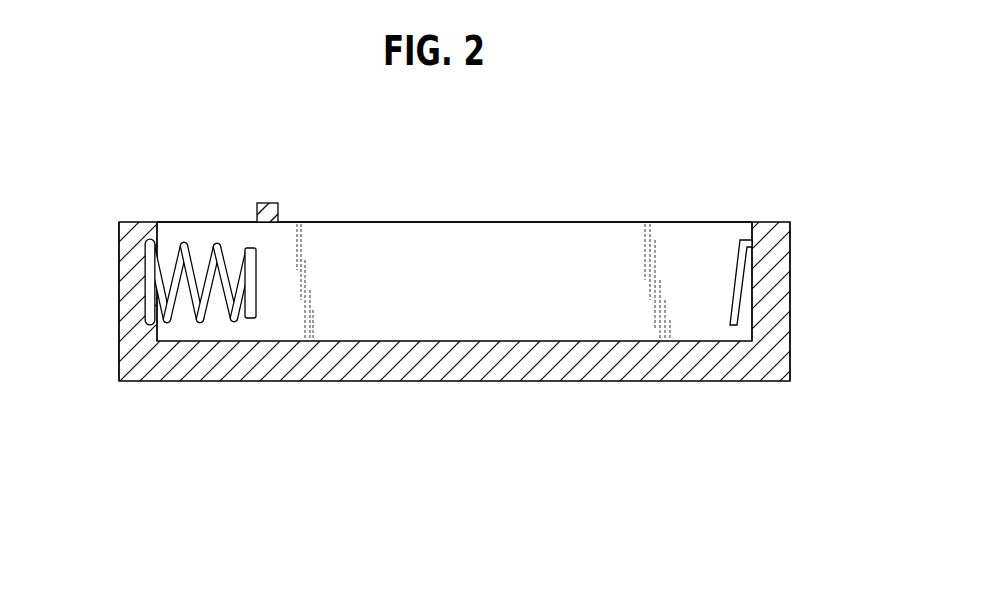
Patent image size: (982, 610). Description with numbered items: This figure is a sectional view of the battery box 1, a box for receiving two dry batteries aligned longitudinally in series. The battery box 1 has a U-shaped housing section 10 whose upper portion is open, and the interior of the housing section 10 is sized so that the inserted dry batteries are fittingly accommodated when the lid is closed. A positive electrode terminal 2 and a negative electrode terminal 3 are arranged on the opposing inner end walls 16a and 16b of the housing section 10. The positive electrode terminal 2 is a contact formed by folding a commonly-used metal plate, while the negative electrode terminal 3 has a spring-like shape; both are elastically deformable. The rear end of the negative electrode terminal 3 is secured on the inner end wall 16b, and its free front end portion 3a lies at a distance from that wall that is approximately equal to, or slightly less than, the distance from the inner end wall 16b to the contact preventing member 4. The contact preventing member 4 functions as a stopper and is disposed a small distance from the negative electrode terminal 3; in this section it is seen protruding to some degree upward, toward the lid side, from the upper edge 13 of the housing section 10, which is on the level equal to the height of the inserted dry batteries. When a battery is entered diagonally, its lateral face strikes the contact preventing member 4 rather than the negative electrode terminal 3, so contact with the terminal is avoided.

The battery box 1 is at (518, 293).
The positive electrode terminal 2 is at (728, 327).
The negative electrode terminal 3 is at (157, 340).
The front end portion 3a is at (252, 318).
The contact preventing member 4 is at (260, 204).
The housing section 10 is at (776, 240).
The upper edge 13 is at (518, 221).
The inner end wall 16a is at (752, 300).
The inner end wall 16b is at (160, 222).